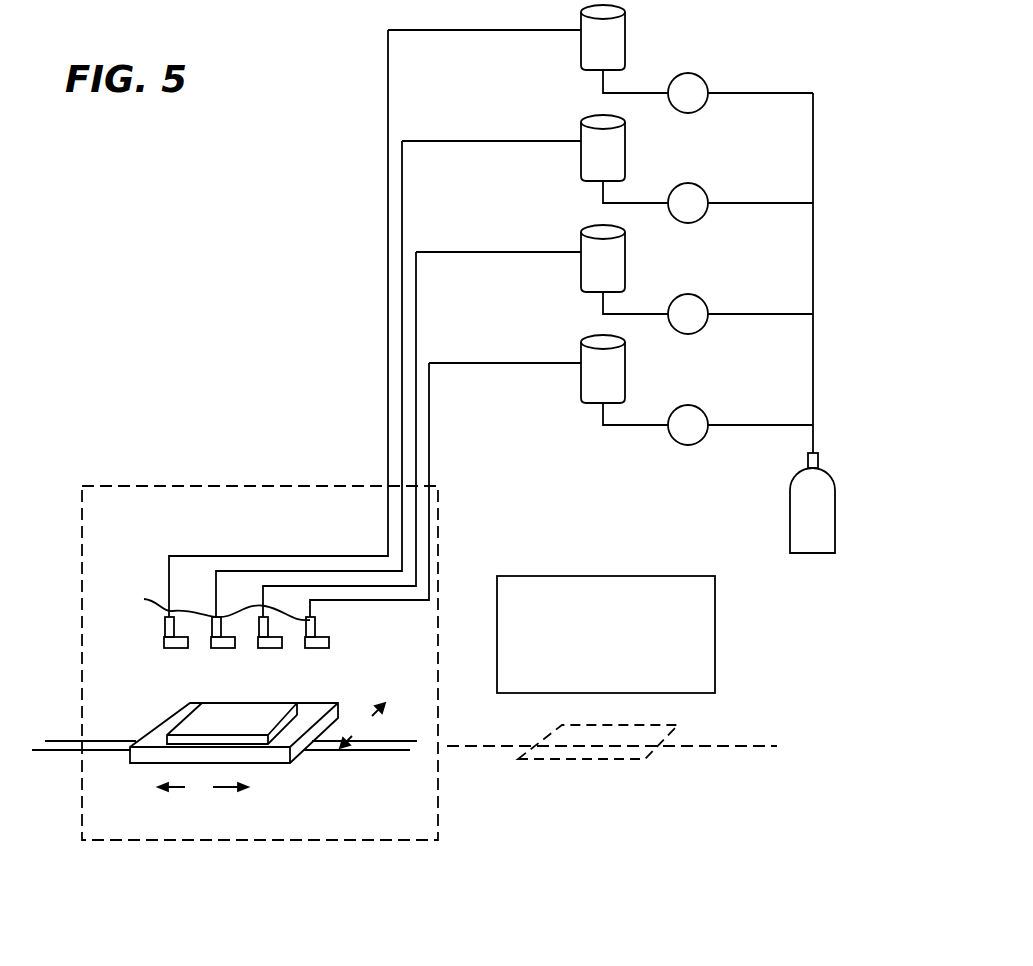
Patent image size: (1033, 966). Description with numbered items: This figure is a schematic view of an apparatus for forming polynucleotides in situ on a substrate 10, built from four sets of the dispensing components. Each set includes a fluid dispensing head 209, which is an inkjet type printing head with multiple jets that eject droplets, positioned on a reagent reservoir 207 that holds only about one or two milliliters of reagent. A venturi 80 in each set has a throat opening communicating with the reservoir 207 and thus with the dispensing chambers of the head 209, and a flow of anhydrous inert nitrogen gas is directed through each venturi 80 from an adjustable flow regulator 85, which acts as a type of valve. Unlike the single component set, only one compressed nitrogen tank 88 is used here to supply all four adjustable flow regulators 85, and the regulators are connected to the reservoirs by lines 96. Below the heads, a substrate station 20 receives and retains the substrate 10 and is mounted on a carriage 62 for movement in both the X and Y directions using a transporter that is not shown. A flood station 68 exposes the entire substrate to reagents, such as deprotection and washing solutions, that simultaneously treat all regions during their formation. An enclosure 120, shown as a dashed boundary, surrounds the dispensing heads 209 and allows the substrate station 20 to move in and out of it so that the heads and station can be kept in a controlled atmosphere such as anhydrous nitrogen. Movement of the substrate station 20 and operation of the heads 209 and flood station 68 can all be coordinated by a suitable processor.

The substrate 10 is at (227, 718).
The substrate station 20 is at (143, 771).
The carriage 62 is at (378, 772).
The flood station 68 is at (702, 661).
The venturi 80 is at (650, 38).
The adjustable flow regulator 85 is at (702, 107).
The compressed nitrogen tank 88 is at (802, 492).
The supply lines 96 is at (388, 405).
The enclosure 120 is at (62, 790).
The reagent reservoir 207 is at (205, 603).
The fluid dispensing head 209 is at (205, 658).